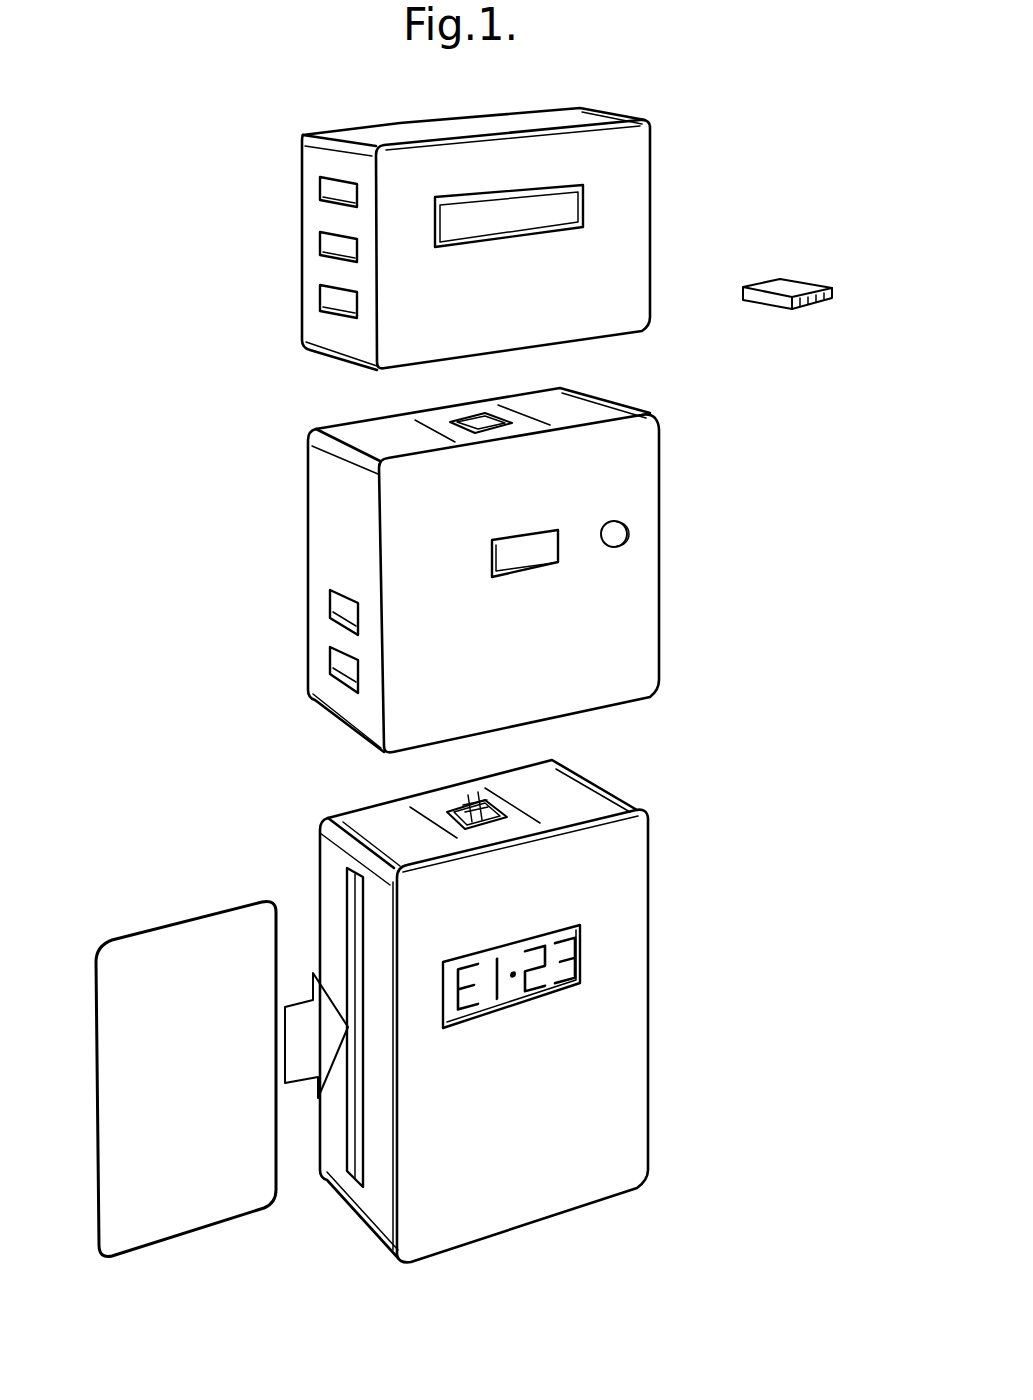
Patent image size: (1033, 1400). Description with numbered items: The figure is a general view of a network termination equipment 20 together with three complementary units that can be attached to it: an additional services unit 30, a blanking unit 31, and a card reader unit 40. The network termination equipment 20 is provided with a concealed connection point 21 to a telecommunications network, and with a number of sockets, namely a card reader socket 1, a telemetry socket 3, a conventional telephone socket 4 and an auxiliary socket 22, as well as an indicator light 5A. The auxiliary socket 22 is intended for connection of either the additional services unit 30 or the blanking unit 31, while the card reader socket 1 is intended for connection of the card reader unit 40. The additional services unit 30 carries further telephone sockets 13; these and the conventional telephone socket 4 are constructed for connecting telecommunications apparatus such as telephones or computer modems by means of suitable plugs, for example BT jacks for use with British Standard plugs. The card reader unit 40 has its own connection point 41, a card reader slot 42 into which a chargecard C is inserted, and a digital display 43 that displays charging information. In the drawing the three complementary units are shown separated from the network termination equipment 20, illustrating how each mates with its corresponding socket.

The card reader socket 1 is at (479, 562).
The telemetry socket 3 is at (334, 613).
The conventional telephone socket 4 is at (557, 563).
The indicator light 5A is at (627, 537).
The further telephone sockets 13 is at (453, 210).
The network termination equipment 20 is at (661, 470).
The connection point 21 is at (307, 497).
The auxiliary socket 22 is at (472, 422).
The additional services unit 30 is at (651, 213).
The blanking unit 31 is at (808, 280).
The card reader unit 40 is at (649, 1115).
The connection point 41 is at (463, 803).
The card reader slot 42 is at (353, 880).
The digital display 43 is at (575, 962).
The chargecard C is at (200, 1093).